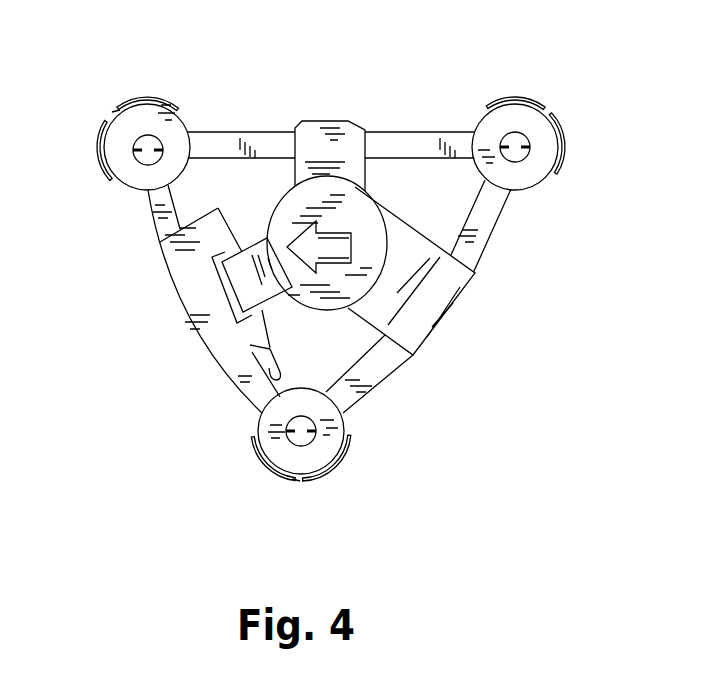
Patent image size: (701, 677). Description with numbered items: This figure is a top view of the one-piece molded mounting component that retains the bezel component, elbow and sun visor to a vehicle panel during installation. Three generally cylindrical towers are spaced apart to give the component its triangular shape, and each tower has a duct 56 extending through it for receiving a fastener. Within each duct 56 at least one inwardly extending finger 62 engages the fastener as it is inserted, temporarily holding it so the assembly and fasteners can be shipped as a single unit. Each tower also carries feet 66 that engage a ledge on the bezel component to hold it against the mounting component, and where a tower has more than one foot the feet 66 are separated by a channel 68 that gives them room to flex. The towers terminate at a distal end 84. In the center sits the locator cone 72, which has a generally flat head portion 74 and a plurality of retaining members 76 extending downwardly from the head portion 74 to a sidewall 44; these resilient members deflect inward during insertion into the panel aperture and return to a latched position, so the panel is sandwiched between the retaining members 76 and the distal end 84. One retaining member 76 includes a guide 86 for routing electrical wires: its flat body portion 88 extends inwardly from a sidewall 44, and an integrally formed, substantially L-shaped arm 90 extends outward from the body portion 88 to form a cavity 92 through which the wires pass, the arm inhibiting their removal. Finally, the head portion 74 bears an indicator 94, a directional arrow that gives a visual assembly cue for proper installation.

The sidewall 44 is at (145, 202).
The duct 56 is at (530, 153).
The finger 62 is at (505, 131).
The foot 66 is at (162, 100).
The channel 68 is at (117, 115).
The locator cone 72 is at (373, 196).
The head portion 74 is at (368, 227).
The retaining member 76 is at (308, 133).
The distal end 84 is at (178, 127).
The guide 86 is at (188, 320).
The body portion 88 is at (248, 345).
The arm 90 is at (288, 371).
The cavity 92 is at (253, 365).
The indicator 94 is at (327, 250).